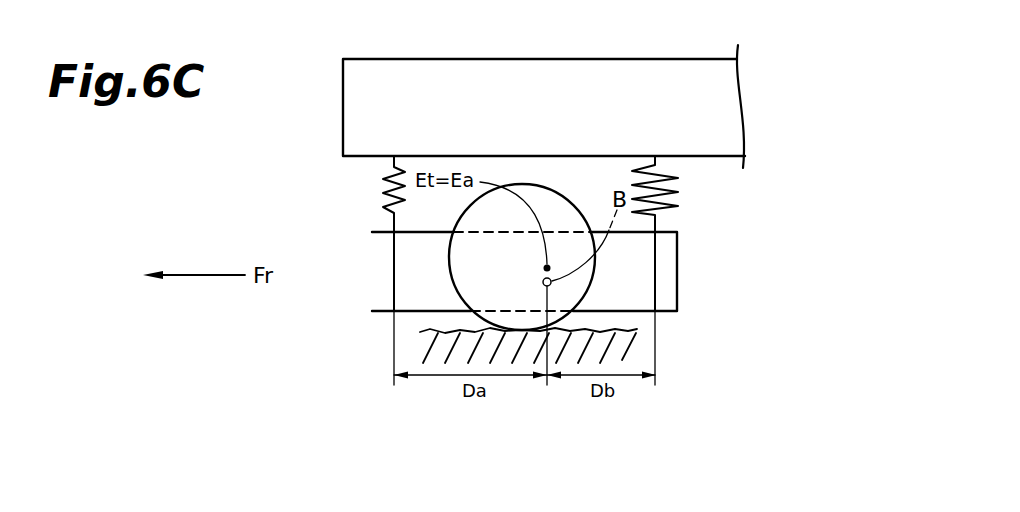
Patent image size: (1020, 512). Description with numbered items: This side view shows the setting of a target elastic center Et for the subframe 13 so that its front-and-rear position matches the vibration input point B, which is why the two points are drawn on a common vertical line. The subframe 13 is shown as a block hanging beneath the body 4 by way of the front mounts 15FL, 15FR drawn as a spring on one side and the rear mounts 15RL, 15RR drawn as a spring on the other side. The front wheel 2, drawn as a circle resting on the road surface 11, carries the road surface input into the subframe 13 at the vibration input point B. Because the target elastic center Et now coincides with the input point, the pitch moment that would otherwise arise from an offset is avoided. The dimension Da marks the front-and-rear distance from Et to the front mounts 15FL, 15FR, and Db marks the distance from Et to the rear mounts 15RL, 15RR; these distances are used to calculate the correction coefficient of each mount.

The vehicle body 4 is at (615, 59).
The front wheel 2 is at (550, 192).
The road surface 11 is at (370, 322).
The subframe 13 is at (678, 278).
The front mount 15FL is at (306, 194).
The front mount 15FR is at (383, 174).
The rear mount 15RL is at (751, 194).
The rear mount 15RR is at (678, 185).